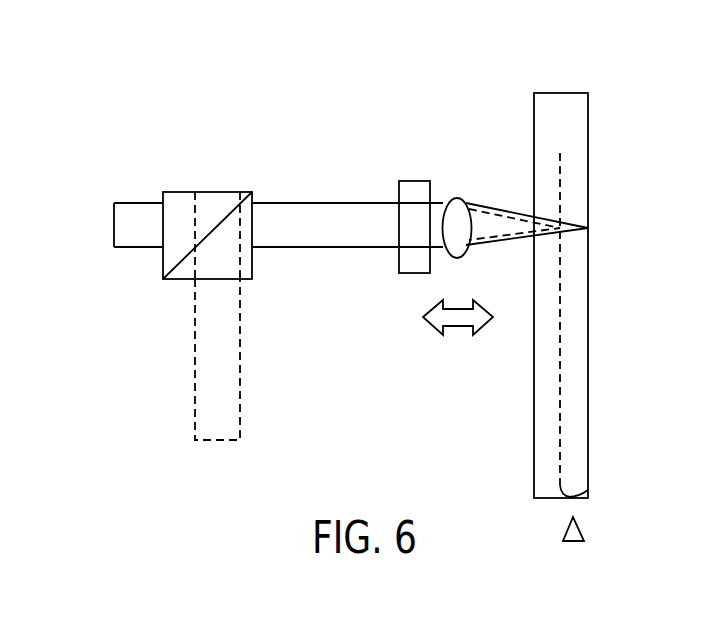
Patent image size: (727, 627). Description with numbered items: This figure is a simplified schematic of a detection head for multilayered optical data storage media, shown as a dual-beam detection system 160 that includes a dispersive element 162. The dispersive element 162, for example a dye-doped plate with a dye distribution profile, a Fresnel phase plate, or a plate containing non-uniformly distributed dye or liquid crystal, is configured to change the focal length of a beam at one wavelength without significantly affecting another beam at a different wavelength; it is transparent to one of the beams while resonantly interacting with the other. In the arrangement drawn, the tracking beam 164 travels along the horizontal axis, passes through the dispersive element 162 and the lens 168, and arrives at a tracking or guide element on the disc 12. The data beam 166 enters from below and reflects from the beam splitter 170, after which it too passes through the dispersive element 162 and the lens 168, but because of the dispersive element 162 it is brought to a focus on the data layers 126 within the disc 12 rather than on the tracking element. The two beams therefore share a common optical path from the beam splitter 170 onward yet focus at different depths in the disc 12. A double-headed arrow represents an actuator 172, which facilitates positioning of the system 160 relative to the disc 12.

The dual-beam detection system 160 is at (131, 79).
The tracking beam 164 is at (114, 225).
The beam splitter 170 is at (206, 191).
The data beam 166 is at (194, 345).
The dispersive element 162 is at (417, 180).
The lens 168 is at (455, 200).
The actuator 172 is at (460, 328).
The disc 12 is at (563, 92).
The data layers 126 is at (560, 318).